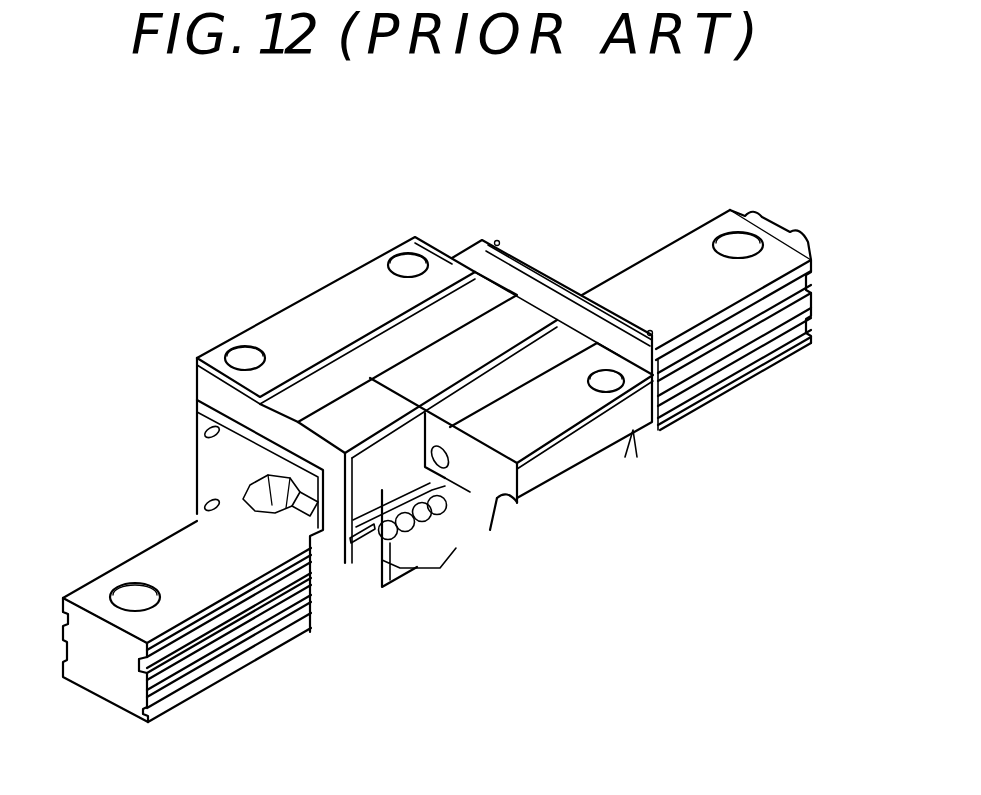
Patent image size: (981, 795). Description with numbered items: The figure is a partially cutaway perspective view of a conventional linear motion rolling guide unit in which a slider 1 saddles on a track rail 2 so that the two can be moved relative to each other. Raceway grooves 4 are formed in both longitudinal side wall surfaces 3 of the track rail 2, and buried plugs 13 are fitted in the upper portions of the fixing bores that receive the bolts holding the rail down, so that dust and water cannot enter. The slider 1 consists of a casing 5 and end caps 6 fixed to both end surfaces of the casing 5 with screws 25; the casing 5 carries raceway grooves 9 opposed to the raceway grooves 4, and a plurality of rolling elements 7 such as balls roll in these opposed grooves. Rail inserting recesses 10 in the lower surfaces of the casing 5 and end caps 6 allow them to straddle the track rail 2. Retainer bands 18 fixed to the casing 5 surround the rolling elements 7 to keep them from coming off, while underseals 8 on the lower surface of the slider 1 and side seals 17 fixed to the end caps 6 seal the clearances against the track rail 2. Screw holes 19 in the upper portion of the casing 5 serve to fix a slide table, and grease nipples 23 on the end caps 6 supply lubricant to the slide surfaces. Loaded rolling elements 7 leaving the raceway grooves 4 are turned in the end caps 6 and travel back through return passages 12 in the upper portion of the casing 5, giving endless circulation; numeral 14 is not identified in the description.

The slider 1 is at (432, 238).
The track rail 2 is at (182, 600).
The longitudinal side wall surfaces 3 is at (237, 649).
The raceway grooves 4 is at (65, 621).
The casing 5 is at (335, 314).
The end caps 6 is at (530, 292).
The rolling elements 7 is at (421, 530).
The underseals 8 is at (441, 549).
The raceway grooves 9 is at (441, 523).
The rail inserting recesses 10 is at (447, 437).
The return passages 12 is at (497, 500).
The buried plugs 13 is at (134, 596).
The rail top surface 14 is at (258, 563).
The side seals 17 is at (571, 299).
The retainer bands 18 is at (366, 552).
The screw holes 19 is at (405, 258).
The grease nipples 23 is at (256, 486).
The screws 25 is at (210, 426).